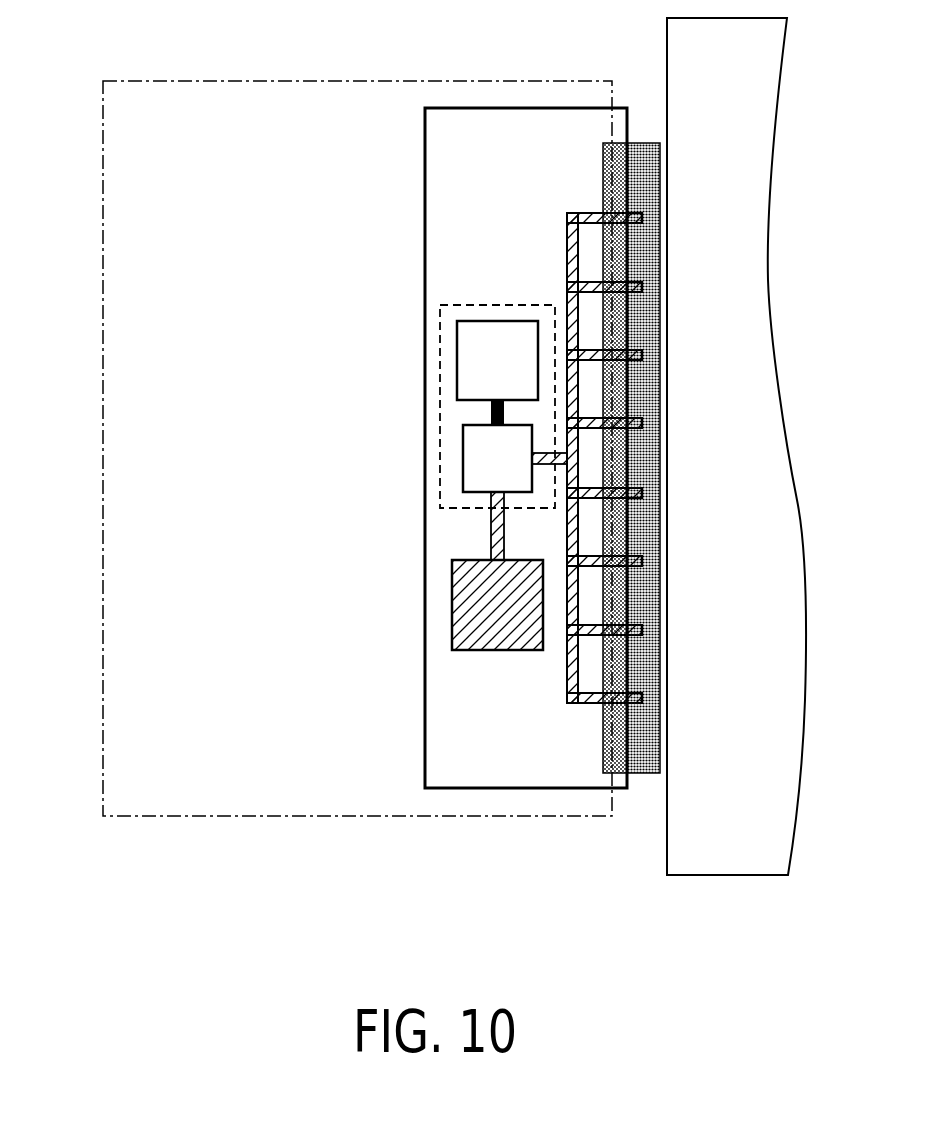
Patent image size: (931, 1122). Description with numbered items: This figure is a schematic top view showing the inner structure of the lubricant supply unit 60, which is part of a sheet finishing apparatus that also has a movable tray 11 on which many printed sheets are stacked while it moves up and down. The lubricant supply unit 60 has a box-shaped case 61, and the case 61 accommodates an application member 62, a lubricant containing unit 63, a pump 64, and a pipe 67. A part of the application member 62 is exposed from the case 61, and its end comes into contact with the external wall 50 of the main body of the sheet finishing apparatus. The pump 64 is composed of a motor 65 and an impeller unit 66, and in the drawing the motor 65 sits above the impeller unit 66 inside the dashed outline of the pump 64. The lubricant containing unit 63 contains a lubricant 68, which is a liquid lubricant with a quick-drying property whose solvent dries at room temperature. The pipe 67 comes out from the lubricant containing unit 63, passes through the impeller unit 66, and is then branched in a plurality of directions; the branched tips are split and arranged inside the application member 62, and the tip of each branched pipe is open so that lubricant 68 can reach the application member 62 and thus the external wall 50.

The movable tray 11 is at (103, 315).
The external wall 50 is at (667, 598).
The lubricant supply unit 60 is at (526, 107).
The case 61 is at (424, 189).
The application member 62 is at (643, 143).
The lubricant containing unit 63 is at (452, 587).
The pump 64 is at (482, 304).
The motor 65 is at (457, 353).
The impeller unit 66 is at (463, 452).
The pipe 67 is at (567, 231).
The lubricant 68 is at (482, 637).